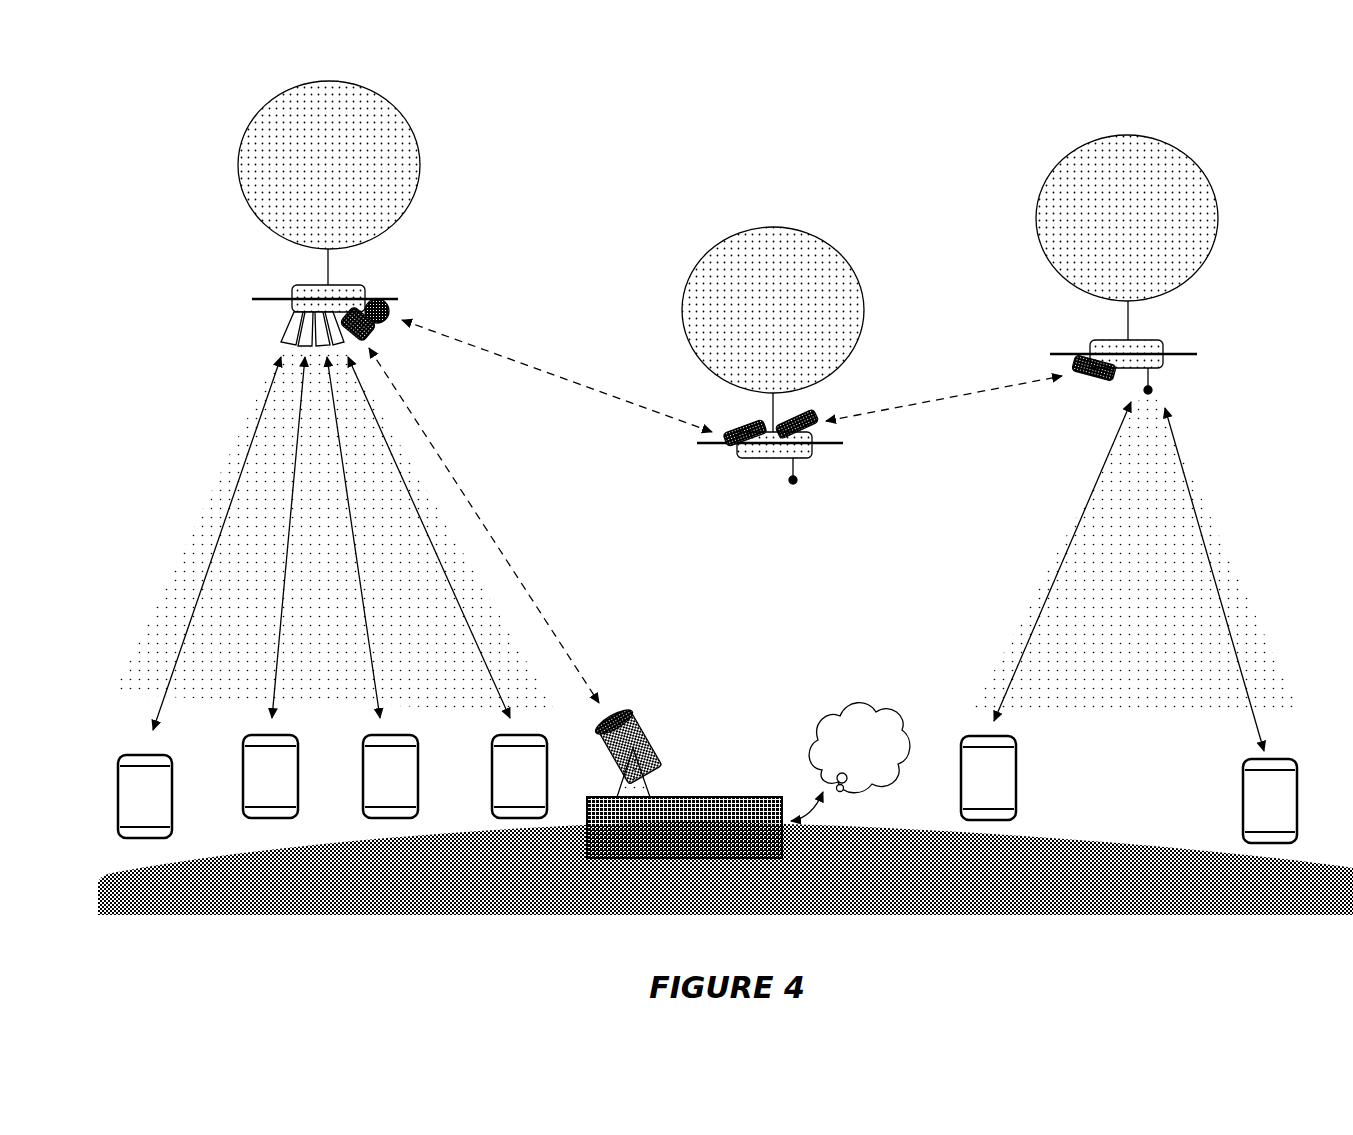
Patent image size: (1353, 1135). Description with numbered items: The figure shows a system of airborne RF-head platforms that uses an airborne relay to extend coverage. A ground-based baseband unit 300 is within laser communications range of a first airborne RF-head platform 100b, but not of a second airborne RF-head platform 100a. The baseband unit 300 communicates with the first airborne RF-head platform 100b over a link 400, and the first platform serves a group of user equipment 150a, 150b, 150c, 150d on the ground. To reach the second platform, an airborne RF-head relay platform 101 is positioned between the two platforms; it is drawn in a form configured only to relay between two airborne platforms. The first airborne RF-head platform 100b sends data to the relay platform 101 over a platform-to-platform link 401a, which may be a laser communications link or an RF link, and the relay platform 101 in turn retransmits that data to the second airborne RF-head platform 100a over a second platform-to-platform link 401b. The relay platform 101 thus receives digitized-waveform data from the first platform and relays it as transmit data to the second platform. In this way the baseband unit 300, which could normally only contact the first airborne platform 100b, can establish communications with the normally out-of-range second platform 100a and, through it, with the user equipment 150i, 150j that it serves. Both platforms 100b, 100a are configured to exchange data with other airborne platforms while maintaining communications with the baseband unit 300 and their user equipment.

The second airborne RF-head platform 100a is at (1091, 264).
The first airborne RF-head platform 100b is at (190, 205).
The airborne RF-head relay platform 101 is at (655, 260).
The platform-to-platform communications link 401a is at (505, 350).
The platform-to-platform communications link 401b is at (968, 384).
The balloon to ground station link 400 is at (531, 580).
The baseband unit 300 is at (690, 793).
The user equipment 150a is at (145, 796).
The user equipment 150b is at (270, 776).
The user equipment 150c is at (390, 776).
The user equipment 150d is at (519, 776).
The user equipment 150i is at (988, 778).
The user equipment 150j is at (1270, 801).